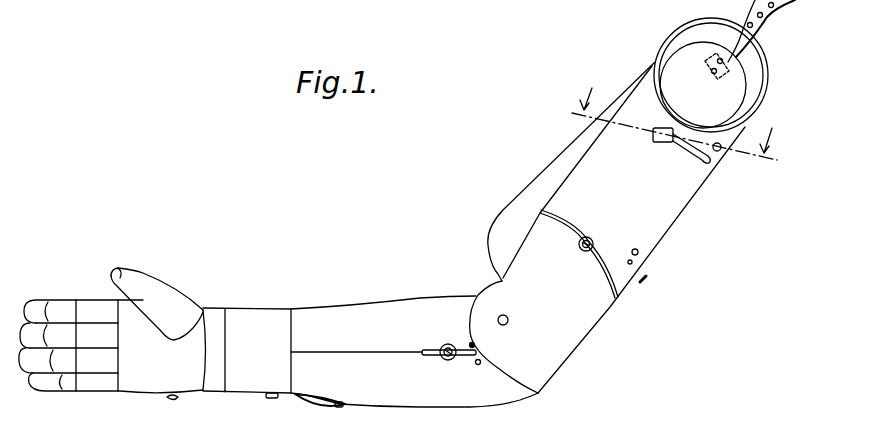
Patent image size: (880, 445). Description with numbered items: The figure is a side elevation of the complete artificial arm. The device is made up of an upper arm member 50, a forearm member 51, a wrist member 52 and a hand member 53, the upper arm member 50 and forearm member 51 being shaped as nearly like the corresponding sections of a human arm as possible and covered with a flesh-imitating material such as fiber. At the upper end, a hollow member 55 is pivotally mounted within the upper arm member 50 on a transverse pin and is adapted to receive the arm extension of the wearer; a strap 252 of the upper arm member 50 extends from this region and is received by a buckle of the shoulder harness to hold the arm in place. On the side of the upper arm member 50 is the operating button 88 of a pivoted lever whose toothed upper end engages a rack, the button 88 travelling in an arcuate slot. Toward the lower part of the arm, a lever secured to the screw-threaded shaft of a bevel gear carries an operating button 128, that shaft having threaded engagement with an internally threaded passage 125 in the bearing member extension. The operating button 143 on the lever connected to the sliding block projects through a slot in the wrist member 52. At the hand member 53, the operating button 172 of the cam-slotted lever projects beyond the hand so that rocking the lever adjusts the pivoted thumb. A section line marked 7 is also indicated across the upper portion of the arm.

The upper arm member 50 is at (680, 183).
The forearm member 51 is at (425, 390).
The wrist member 52 is at (252, 370).
The hand member 53 is at (143, 370).
The hollow member 55 is at (710, 90).
The operating button 88 is at (600, 233).
The internally threaded passage 125 is at (318, 400).
The operating button 128 is at (340, 407).
The operating button 143 is at (272, 398).
The operating button 172 is at (172, 400).
The strap 252 is at (767, 22).
The section line 7- 7 is at (675, 121).